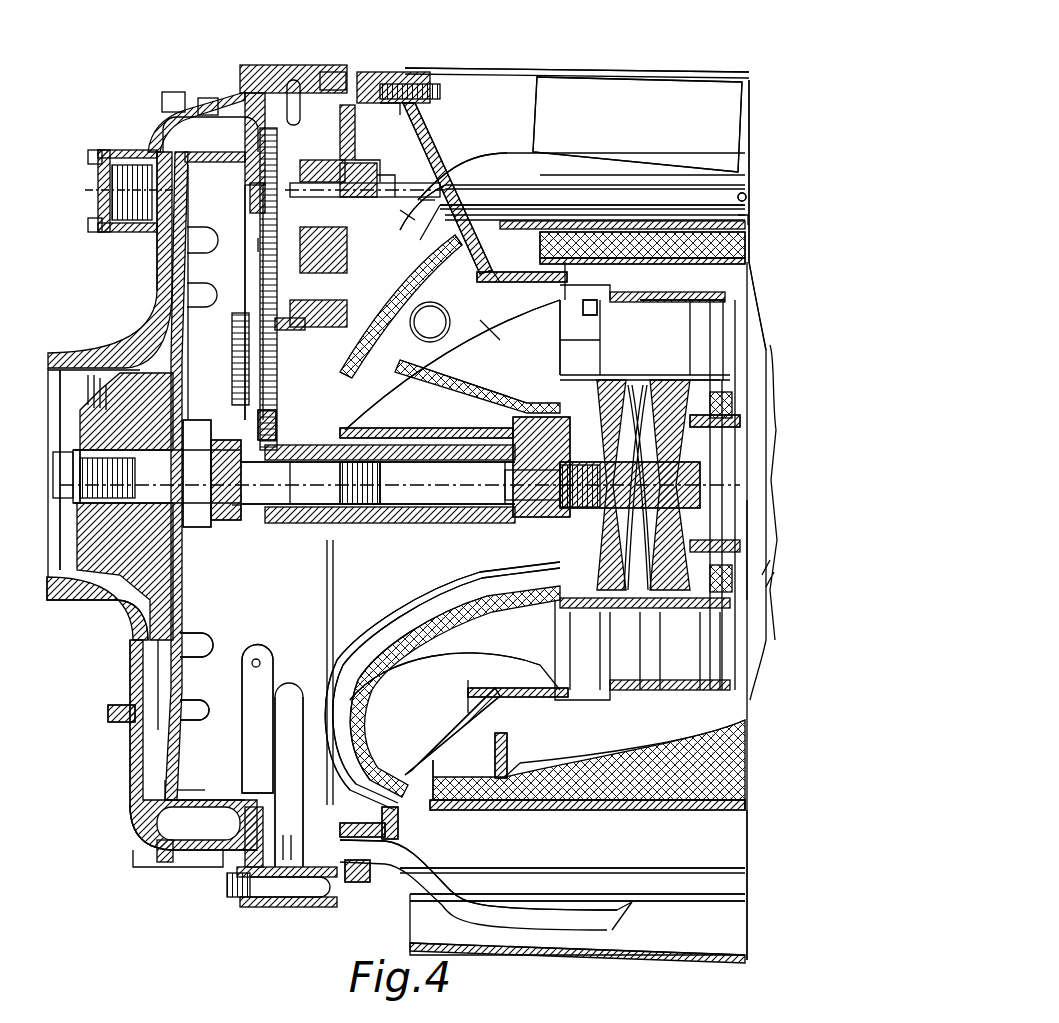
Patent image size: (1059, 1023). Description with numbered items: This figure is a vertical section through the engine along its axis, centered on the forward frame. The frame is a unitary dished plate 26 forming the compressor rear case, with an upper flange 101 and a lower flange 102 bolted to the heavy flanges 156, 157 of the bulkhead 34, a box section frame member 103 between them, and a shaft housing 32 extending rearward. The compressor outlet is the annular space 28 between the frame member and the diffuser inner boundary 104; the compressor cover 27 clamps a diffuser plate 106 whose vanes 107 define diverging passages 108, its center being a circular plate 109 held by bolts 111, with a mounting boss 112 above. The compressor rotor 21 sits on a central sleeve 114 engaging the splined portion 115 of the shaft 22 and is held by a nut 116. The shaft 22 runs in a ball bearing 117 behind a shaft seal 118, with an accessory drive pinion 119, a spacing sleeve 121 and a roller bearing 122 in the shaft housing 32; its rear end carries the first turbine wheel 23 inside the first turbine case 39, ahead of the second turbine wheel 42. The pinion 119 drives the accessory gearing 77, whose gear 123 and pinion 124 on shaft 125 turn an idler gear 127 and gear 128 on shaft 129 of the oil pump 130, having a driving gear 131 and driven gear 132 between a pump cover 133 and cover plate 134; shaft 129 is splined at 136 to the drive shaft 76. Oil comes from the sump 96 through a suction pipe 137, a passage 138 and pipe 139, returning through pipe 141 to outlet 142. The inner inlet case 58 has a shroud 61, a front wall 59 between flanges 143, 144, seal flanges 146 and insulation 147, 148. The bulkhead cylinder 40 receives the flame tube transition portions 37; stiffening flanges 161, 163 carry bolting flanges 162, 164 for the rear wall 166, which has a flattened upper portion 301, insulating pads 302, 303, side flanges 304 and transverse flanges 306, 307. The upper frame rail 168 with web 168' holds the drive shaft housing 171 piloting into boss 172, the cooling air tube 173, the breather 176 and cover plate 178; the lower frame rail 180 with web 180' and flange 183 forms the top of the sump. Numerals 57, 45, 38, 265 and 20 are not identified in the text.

The compressor outlet space 28 is at (238, 95).
The compressor cover 27 is at (158, 123).
The diffuser plate 106 is at (160, 152).
The mounting boss 112 is at (112, 170).
The diffuser inner boundary 104 is at (250, 150).
The gear 128 is at (262, 200).
The accessory drive gearing 77 is at (258, 245).
The idler gear 127 is at (262, 268).
The driving gear 131 is at (320, 185).
The gear 123 is at (238, 340).
The shaft 125 is at (290, 330).
The upper flange 101 is at (365, 72).
The flange 156 is at (420, 80).
The sheet metal plate 178 is at (580, 70).
The bulkhead 34 is at (398, 115).
The shaft 129 is at (366, 170).
The driven gear 132 is at (382, 185).
The boss 172 is at (460, 160).
The tube 173 is at (470, 170).
The lubricating oil pump 130 is at (428, 185).
The bolting flange 162 is at (500, 280).
The drive shaft housing 171 is at (560, 190).
The flange 143 is at (472, 240).
The splined portion 136 is at (408, 215).
The pump cover 133 is at (425, 270).
The accessory gear cover plate 134 is at (400, 300).
The pipe 57 is at (445, 306).
The transverse flange 306 is at (522, 280).
The first turbine case 39 is at (592, 298).
The flange 45 is at (662, 298).
The stiffening flange 161 is at (492, 330).
The bulkhead cylinder 40 is at (560, 330).
The turbine inner inlet case 58 is at (466, 367).
The nozzle 38 is at (577, 346).
The breather or oil separator 176 is at (662, 96).
The upper frame rail 168 is at (774, 171).
The drive shaft 76 is at (750, 200).
The web 168' is at (768, 208).
The insulating pad 302 is at (750, 241).
The upper portion of rear wall 301 is at (702, 263).
The rear wall 166 is at (755, 272).
The shroud 265 is at (706, 380).
The compressor rotor 21 is at (85, 402).
The nut 116 is at (60, 467).
The splined portion 115 is at (140, 478).
The shaft seal 118 is at (197, 467).
The pinion 124 is at (270, 421).
The central sleeve 114 is at (72, 497).
The ball bearing 117 is at (224, 522).
The accessory drive pinion 119 is at (238, 512).
The shaft 22 is at (282, 492).
The circular plate 109 is at (108, 602).
The diverging passages 108 is at (202, 682).
The pipe 141 is at (262, 660).
The shaft housing 32 is at (383, 430).
The transition portions 37 is at (452, 388).
The first turbine wheel 23 is at (585, 490).
The stiffening and spacing sleeve 121 is at (346, 522).
The insulating material 148 is at (456, 592).
The roller bearing 122 is at (520, 512).
The shaft housing shroud 61 is at (471, 602).
The front wall portion 59 is at (431, 666).
The second turbine wheel 42 is at (730, 452).
The flange 144 is at (440, 776).
The bolts 111 is at (112, 718).
The housing 20 is at (122, 844).
The forward frame plate 26 is at (173, 782).
The vanes or ridges 107 is at (197, 708).
The pipe 139 is at (298, 782).
The outlet 142 is at (266, 895).
The insulating material 147 is at (348, 707).
The box section frame member 103 is at (372, 748).
The flanges 146 is at (402, 757).
The bolting flange 164 is at (496, 757).
The stiffening flange 163 is at (516, 697).
The transverse flange 307 is at (532, 754).
The radially extending flange 304 is at (655, 764).
The passage 138 is at (342, 822).
The flange 157 is at (436, 846).
The insulating pad 303 is at (510, 802).
The circumferential flange 183 is at (622, 882).
The suction pipe 137 is at (618, 922).
The sump 96 is at (662, 958).
The lower flange 102 is at (356, 884).
The web 180' is at (765, 796).
The lower frame rail 180 is at (765, 885).